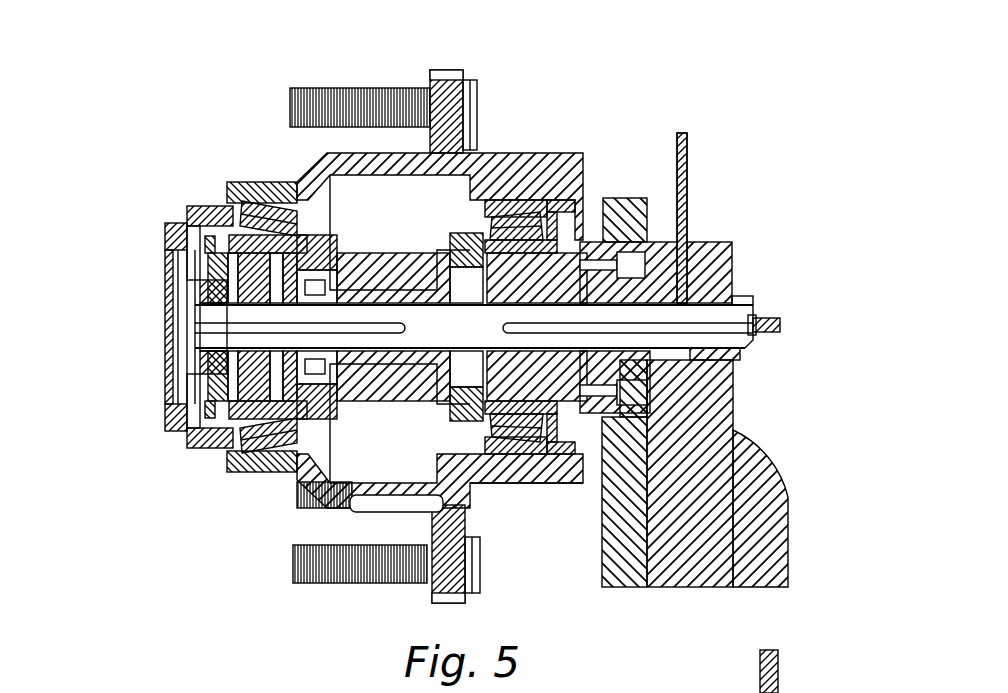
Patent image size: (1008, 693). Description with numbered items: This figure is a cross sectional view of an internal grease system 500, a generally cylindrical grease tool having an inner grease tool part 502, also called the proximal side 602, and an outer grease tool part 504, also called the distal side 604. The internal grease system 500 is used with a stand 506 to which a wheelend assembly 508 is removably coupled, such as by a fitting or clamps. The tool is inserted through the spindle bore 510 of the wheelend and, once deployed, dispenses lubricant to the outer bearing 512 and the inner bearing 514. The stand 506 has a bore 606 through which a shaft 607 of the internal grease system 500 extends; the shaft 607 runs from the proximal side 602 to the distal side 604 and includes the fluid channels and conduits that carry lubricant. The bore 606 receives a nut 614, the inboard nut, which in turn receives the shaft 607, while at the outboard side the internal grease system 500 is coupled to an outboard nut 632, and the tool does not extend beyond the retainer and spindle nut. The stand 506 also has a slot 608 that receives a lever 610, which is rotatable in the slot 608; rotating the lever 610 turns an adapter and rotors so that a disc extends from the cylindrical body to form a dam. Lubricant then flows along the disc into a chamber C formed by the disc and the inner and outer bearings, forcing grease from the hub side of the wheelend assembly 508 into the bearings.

The internal grease system 500 is at (462, 352).
The inner grease tool part 502 is at (393, 309).
The outer grease tool part 504 is at (508, 443).
The stand 506 is at (729, 467).
The wheelend assembly 508 is at (383, 84).
The spindle bore 510 is at (137, 345).
The outer bearing 512 is at (174, 345).
The inner bearing 514 is at (533, 289).
The proximal side 602 is at (718, 299).
The distal side 604 is at (174, 458).
The bore 606 is at (695, 296).
The shaft 607 is at (776, 354).
The slot 608 is at (661, 296).
The lever 610 is at (729, 214).
The nut 614 is at (782, 286).
The outboard nut 632 is at (134, 327).
The chamber C is at (526, 503).